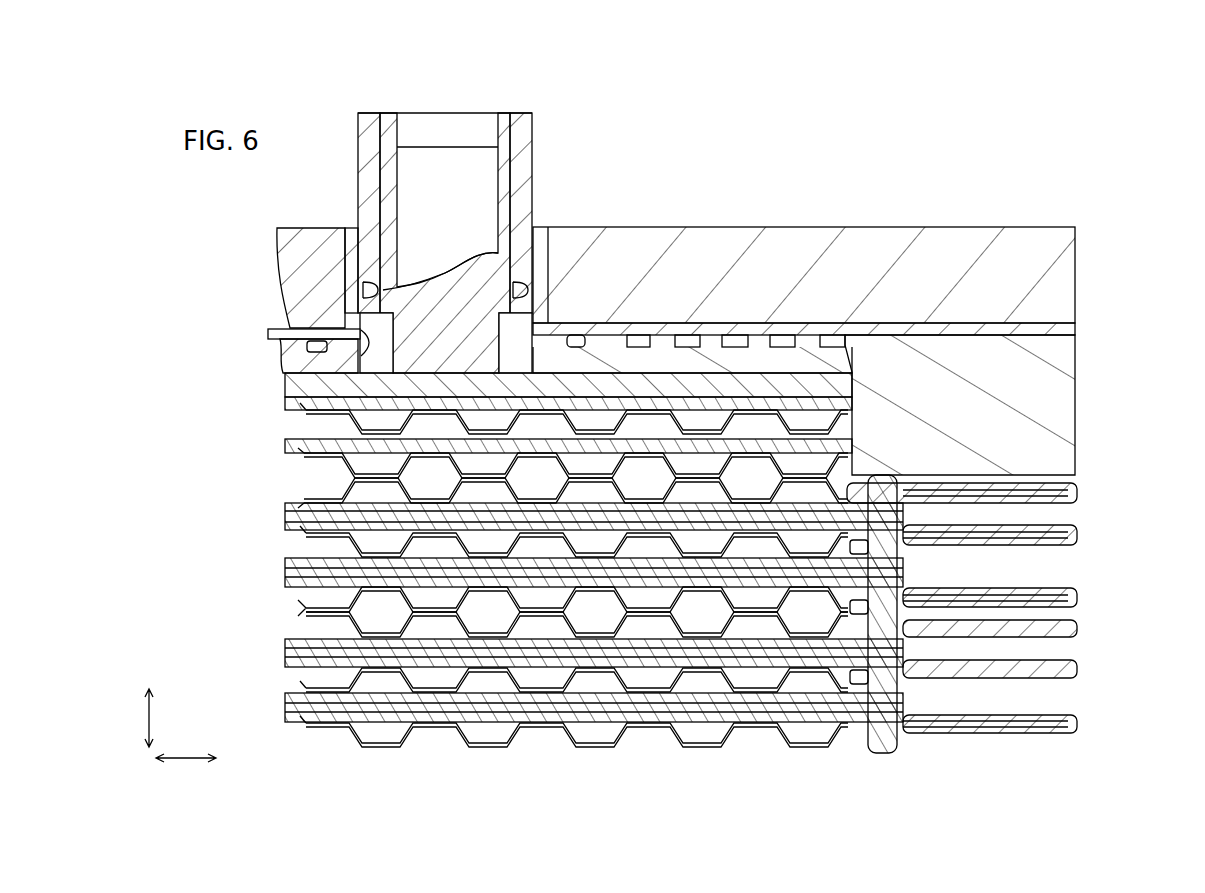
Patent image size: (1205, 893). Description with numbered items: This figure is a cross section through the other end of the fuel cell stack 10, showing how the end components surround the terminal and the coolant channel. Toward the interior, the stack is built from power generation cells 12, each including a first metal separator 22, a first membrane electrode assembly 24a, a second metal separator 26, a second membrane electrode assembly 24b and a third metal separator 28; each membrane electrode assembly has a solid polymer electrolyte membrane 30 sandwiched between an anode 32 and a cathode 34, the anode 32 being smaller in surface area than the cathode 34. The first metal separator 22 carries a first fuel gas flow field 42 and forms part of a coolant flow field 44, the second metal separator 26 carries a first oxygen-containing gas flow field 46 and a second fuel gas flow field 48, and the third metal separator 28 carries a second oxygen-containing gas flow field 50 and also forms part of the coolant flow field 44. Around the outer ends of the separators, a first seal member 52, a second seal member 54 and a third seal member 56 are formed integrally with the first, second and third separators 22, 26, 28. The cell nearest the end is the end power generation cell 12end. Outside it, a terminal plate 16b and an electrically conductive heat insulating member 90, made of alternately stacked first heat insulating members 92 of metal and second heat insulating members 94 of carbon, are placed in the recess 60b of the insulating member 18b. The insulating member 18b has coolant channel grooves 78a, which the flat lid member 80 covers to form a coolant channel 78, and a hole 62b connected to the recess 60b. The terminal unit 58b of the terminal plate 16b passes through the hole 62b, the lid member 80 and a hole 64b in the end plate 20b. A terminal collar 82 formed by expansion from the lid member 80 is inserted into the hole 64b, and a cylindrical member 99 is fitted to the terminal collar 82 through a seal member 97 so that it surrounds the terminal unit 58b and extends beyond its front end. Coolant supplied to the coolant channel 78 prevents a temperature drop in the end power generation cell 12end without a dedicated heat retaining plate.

The fuel cell stack 10 is at (701, 140).
The power generation cell 12 is at (1140, 630).
The end power generation cell 12end is at (1024, 587).
The terminal plate 16b is at (276, 389).
The insulating member 18b is at (271, 361).
The end plate 20b is at (264, 262).
The first metal separator 22 is at (1090, 493).
The first membrane electrode assembly 24a is at (290, 507).
The second membrane electrode assembly 24b is at (292, 600).
The second metal separator 26 is at (1090, 535).
The third metal separator 28 is at (1020, 657).
The solid polymer electrolyte membrane 30 is at (290, 575).
The anode 32 is at (290, 561).
The cathode 34 is at (290, 586).
The first fuel gas flow field 42 is at (700, 490).
The coolant flow field 44 is at (378, 617).
The first oxygen-containing gas flow field 46 is at (493, 540).
The second fuel gas flow field 48 is at (635, 548).
The second oxygen-containing gas flow field 50 is at (537, 595).
The first seal member 52 is at (1073, 486).
The second seal member 54 is at (1077, 546).
The third seal member 56 is at (1080, 606).
The terminal unit 58b is at (480, 203).
The recess 60b is at (856, 418).
The hole 62b is at (370, 336).
The hole 64b is at (368, 286).
The coolant channel 78 is at (762, 334).
The coolant channel grooves 78a is at (640, 338).
The lid member 80 is at (260, 335).
The terminal collar 82 is at (352, 230).
The heat insulating member 90 is at (505, 438).
The first heat insulating members 92 is at (302, 417).
The second heat insulating members 94 is at (283, 403).
The seal member 97 is at (372, 276).
The cylindrical member 99 is at (530, 166).